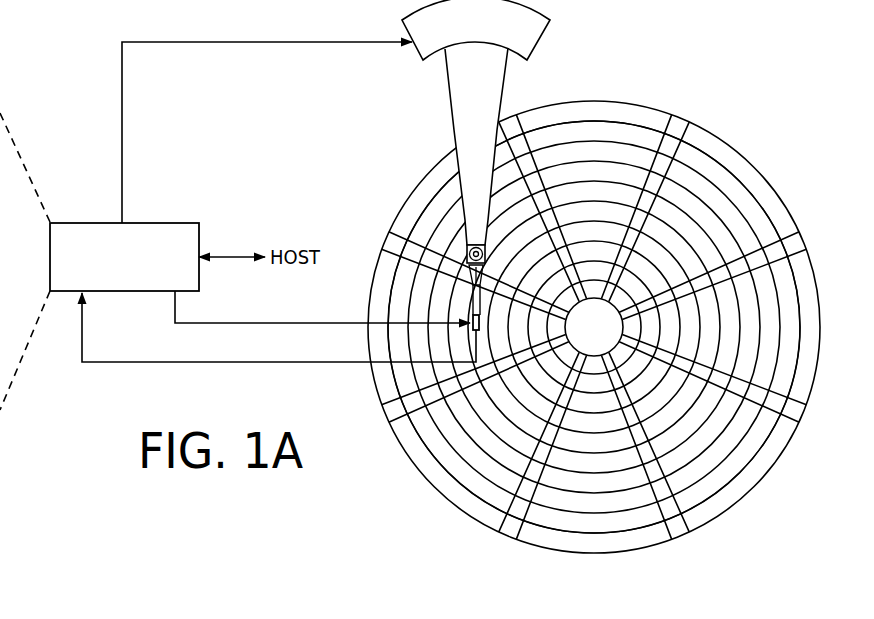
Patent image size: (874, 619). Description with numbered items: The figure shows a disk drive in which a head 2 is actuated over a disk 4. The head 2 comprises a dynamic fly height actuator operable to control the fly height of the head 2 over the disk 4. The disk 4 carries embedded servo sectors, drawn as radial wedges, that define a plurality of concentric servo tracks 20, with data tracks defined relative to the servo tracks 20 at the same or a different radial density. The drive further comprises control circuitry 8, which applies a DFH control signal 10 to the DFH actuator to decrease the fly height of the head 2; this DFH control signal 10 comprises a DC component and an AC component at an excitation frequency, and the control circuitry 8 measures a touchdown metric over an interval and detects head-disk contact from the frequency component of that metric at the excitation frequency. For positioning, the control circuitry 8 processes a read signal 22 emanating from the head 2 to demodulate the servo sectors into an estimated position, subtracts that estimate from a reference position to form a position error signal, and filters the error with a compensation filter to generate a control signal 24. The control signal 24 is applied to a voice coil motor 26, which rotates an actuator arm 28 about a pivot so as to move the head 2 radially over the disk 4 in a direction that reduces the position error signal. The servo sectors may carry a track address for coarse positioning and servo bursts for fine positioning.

The head 2 is at (468, 334).
The disk 4 is at (752, 155).
The control circuitry 8 is at (162, 222).
The DFH control signal 10 is at (344, 322).
The servo tracks 20 is at (590, 131).
The read signal 22 is at (258, 365).
The control signal 24 is at (122, 118).
The voice coil motor (VCM) 26 is at (418, 50).
The actuator arm 28 is at (458, 130).